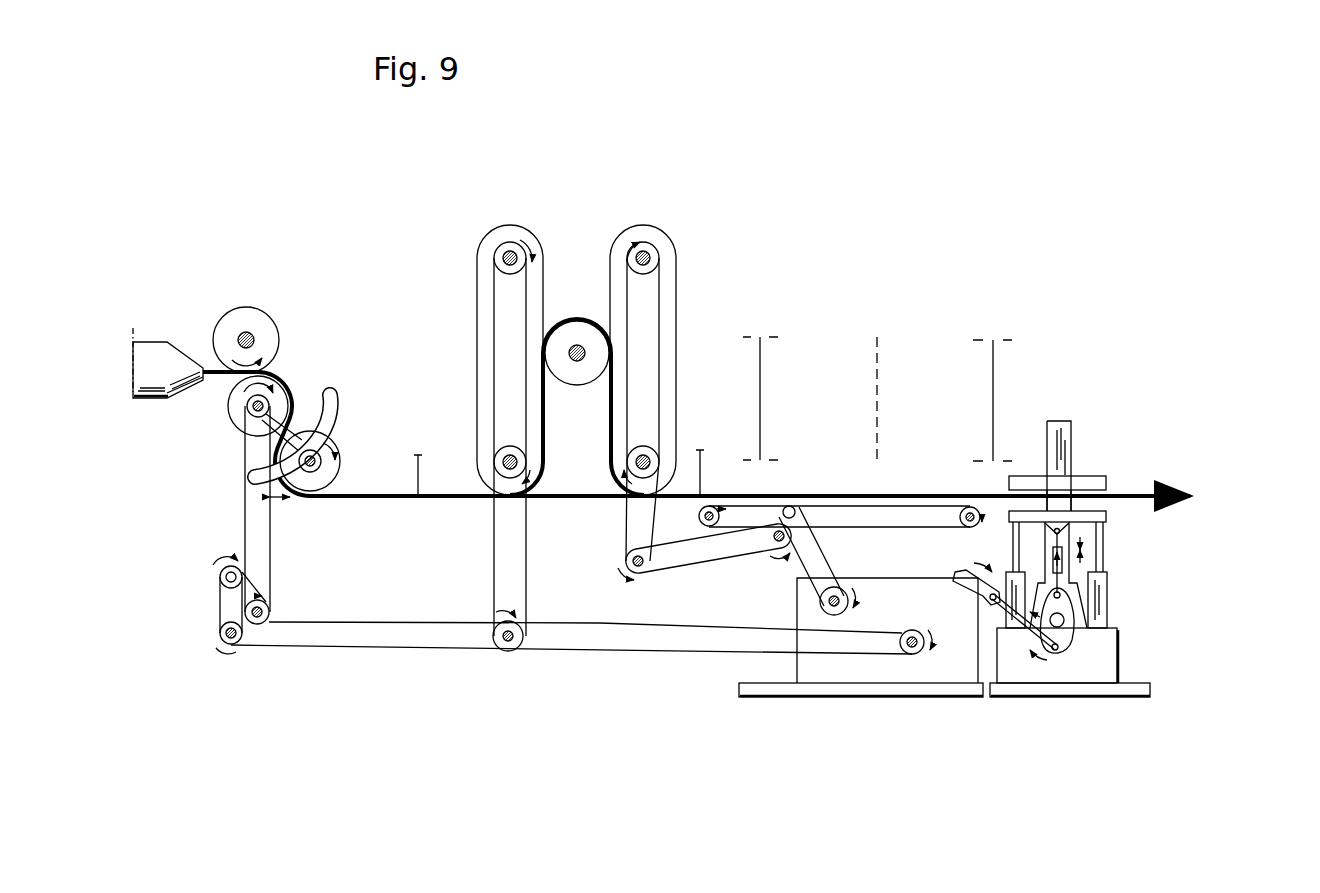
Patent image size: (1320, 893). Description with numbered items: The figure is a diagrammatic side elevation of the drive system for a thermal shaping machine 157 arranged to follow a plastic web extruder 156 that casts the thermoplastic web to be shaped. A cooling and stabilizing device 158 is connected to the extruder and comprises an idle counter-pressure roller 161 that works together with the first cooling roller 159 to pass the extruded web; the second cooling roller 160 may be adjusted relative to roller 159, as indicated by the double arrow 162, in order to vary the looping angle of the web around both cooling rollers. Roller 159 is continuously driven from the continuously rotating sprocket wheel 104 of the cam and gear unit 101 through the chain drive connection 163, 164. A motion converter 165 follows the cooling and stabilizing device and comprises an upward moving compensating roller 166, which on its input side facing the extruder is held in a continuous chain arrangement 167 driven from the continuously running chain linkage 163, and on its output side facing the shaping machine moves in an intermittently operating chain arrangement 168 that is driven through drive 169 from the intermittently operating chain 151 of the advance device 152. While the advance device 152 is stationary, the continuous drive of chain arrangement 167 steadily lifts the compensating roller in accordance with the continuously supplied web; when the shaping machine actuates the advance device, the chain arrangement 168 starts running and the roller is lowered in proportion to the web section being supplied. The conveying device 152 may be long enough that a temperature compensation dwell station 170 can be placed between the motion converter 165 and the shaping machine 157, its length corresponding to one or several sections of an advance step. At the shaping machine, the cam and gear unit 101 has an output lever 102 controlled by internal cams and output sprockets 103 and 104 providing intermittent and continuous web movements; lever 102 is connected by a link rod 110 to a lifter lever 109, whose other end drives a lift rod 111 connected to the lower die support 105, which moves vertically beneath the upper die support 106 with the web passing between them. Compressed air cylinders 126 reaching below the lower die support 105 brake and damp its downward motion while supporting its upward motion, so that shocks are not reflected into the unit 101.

The cam and gear unit 101 is at (915, 577).
The output lever 102 is at (973, 583).
The output sprocket 103 is at (850, 610).
The output sprocket 104 is at (912, 655).
The lower die support 105 is at (1107, 517).
The upper die support 106 is at (1093, 482).
The lifter lever 109 is at (1073, 627).
The link rod 110 is at (987, 697).
The lift rod 111 is at (1053, 558).
The compressed air cylinder 126 is at (1107, 575).
The intermittently operating chain 151 is at (820, 547).
The advance device 152 is at (918, 523).
The plastic web extruder 156 is at (153, 320).
The thermal shaping machine 157 is at (1083, 448).
The cooling and stabilizing device 158 is at (293, 362).
The first cooling roller 159 is at (240, 417).
The second cooling roller 160 is at (333, 474).
The idle counter-pressure roller 161 is at (243, 313).
The double arrow 162 is at (351, 428).
The chain drive connection 163 is at (387, 622).
The chain drive connection 164 is at (267, 526).
The motion converter 165 is at (574, 262).
The compensating roller 166 is at (577, 373).
The continuous chain arrangement 167 is at (478, 315).
The intermittently operating chain arrangement 168 is at (675, 317).
The drive 169 is at (715, 562).
The temperature compensation dwell station 170 is at (850, 395).